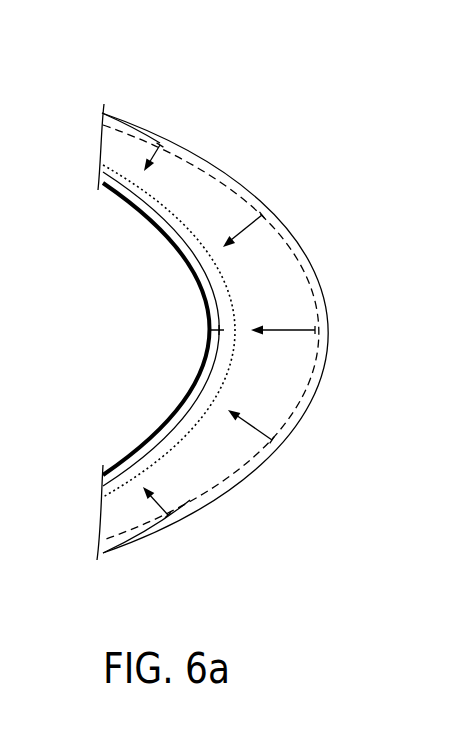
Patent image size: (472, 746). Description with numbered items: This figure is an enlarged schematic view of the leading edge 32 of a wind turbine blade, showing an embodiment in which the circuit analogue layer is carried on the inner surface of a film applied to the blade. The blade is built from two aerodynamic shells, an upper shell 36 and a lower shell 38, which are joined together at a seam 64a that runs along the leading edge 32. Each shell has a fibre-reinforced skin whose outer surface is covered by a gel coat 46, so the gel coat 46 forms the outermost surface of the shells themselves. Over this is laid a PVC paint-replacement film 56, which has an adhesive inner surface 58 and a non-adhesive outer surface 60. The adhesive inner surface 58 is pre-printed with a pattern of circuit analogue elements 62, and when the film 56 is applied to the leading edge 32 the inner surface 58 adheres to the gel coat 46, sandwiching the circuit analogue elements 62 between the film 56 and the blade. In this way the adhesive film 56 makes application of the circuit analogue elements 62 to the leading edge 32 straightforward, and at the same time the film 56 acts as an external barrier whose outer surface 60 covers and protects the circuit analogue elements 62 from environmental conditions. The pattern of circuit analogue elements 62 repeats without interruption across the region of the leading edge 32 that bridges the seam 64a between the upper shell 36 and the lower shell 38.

The upper shell 36 is at (96, 85).
The PVC paint-replacement film 56 is at (135, 121).
The adhesive inner surface 58 is at (128, 140).
The circuit analogue elements 62 is at (213, 173).
The non-adhesive outer surface 60 is at (295, 227).
The seam 64a is at (229, 322).
The gel coat 46 is at (125, 483).
The leading edge 32 is at (125, 243).
The lower shell 38 is at (168, 549).